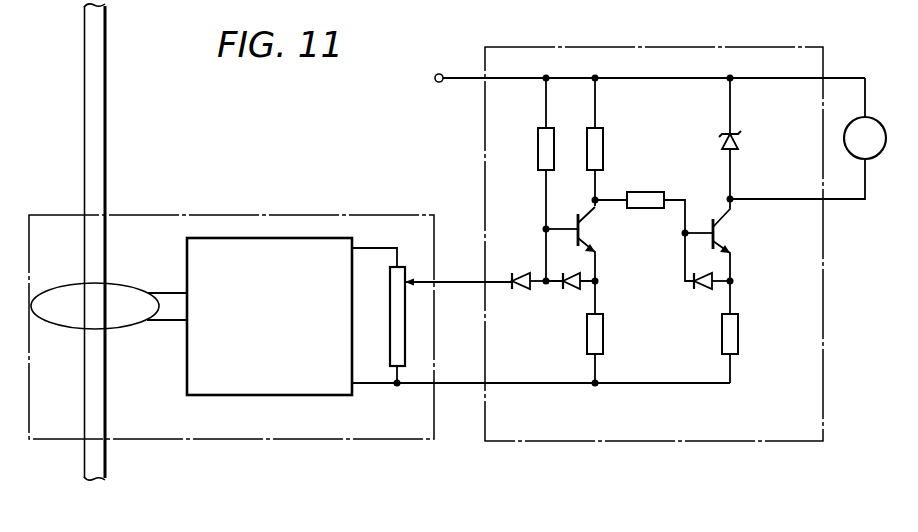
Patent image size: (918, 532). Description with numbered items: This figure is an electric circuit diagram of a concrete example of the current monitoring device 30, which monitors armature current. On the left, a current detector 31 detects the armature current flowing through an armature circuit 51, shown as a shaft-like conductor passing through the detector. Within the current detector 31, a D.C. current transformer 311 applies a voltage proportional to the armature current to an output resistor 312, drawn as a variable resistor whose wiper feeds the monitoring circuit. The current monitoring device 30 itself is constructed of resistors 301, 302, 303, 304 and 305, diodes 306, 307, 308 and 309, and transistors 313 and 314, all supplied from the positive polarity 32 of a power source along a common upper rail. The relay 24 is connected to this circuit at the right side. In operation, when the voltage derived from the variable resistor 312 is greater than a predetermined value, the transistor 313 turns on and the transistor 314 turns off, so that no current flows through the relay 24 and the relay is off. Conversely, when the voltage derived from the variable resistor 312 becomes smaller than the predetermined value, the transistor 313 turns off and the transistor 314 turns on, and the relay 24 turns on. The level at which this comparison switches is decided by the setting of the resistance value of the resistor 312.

The armature circuit 51 is at (106, 107).
The current detector 31 is at (312, 498).
The D.C. current transformer 311 is at (187, 364).
The output resistor 312 is at (388, 350).
The current monitoring device 30 is at (688, 441).
The positive polarity of a power source 32 is at (435, 81).
The relay 24 is at (872, 158).
The resistor 301 is at (543, 127).
The resistor 302 is at (605, 147).
The resistor 303 is at (603, 327).
The resistor 304 is at (637, 191).
The resistor 305 is at (738, 338).
The diode 306 is at (521, 273).
The diode 307 is at (574, 289).
The diode 308 is at (705, 289).
The diode 309 is at (750, 126).
The transistor 313 is at (587, 218).
The transistor 314 is at (724, 227).